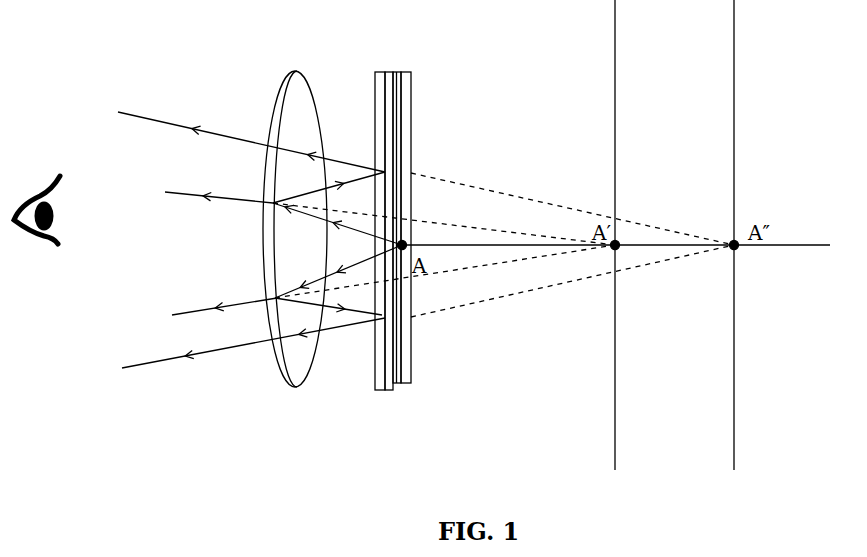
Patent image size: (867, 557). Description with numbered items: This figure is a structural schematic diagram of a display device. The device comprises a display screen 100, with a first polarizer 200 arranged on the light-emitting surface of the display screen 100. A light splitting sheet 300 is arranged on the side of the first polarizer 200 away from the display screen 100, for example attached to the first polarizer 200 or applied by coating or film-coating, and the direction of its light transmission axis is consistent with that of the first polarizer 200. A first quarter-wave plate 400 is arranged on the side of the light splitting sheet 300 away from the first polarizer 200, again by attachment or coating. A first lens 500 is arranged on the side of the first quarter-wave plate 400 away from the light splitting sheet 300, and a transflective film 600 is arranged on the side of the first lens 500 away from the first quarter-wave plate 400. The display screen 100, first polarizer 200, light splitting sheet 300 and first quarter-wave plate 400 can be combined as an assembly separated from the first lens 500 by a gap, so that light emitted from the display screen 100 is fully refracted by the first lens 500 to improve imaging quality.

The display screen 100 is at (412, 130).
The first polarizer 200 is at (402, 78).
The light splitting sheet 300 is at (388, 388).
The first quarter-wave plate 400 is at (378, 98).
The first lens 500 is at (302, 366).
The transflective film 600 is at (280, 93).